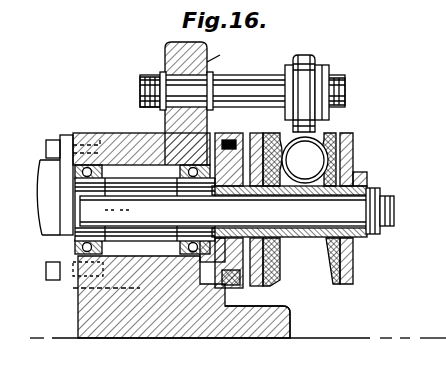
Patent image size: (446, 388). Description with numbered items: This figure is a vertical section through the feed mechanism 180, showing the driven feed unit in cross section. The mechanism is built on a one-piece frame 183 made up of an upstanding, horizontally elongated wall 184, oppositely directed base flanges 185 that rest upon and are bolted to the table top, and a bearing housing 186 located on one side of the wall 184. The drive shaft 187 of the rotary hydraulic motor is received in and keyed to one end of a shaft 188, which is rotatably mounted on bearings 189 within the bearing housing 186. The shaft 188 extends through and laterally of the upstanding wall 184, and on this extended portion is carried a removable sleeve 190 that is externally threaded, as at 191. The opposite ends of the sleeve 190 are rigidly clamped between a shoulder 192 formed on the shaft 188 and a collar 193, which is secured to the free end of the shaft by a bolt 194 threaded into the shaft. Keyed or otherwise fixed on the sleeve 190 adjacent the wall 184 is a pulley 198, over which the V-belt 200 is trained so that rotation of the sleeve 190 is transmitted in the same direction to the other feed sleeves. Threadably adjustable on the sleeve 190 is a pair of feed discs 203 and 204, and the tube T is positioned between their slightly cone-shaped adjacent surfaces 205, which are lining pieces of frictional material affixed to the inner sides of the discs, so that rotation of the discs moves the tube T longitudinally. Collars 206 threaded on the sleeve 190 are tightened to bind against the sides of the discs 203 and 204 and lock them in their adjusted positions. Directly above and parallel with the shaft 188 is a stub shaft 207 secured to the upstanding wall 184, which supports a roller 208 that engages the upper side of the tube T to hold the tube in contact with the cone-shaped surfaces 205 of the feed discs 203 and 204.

The feed mechanism 180 is at (123, 131).
The one-piece frame 183 is at (215, 63).
The upstanding wall 184 is at (165, 56).
The base flanges 185 is at (100, 337).
The bearing housing 186 is at (88, 133).
The drive shaft 187 is at (104, 133).
The shaft 188 is at (150, 232).
The bearings 189 is at (88, 275).
The removable sleeve 190 is at (250, 258).
The external threads 191 is at (296, 238).
The shoulder 192 is at (172, 200).
The collar 193 is at (370, 188).
The bolt 194 is at (388, 211).
The pulley 198 is at (250, 133).
The V-belt 200 is at (250, 306).
The feed disc 203 is at (276, 272).
The feed disc 204 is at (352, 152).
The cone-shaped surfaces 205 is at (279, 142).
The collars 206 is at (360, 186).
The stub shaft 207 is at (262, 80).
The roller 208 is at (306, 64).
The tube T is at (320, 142).